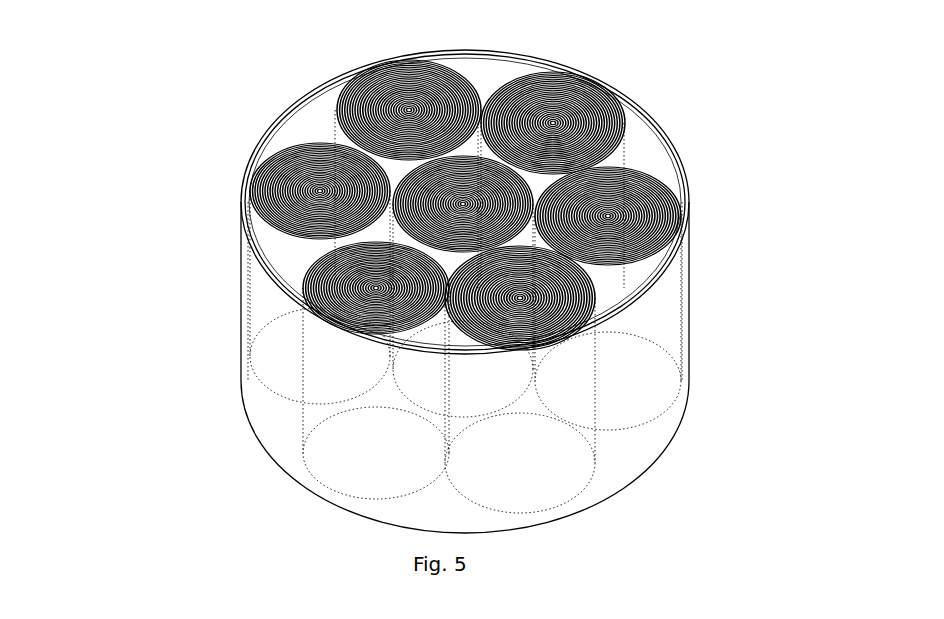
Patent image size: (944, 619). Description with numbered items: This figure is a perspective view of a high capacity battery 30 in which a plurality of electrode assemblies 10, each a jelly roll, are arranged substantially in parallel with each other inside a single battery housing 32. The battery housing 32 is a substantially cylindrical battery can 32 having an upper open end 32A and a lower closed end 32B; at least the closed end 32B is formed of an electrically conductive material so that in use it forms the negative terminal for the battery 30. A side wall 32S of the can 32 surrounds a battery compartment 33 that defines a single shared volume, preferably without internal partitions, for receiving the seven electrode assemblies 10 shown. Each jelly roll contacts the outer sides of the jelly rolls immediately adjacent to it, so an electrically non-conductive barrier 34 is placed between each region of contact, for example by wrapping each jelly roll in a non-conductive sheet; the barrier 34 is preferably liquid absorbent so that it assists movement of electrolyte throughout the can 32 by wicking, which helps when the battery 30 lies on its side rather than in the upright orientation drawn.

The electrode assembly 10 is at (445, 62).
The high capacity battery 30 is at (190, 163).
The battery housing 32 is at (682, 272).
The upper open end 32A is at (273, 243).
The side wall 32S is at (237, 320).
The lower closed end 32B is at (302, 480).
The battery compartment 33 is at (296, 102).
The electrically non-conductive barrier 34 is at (428, 312).